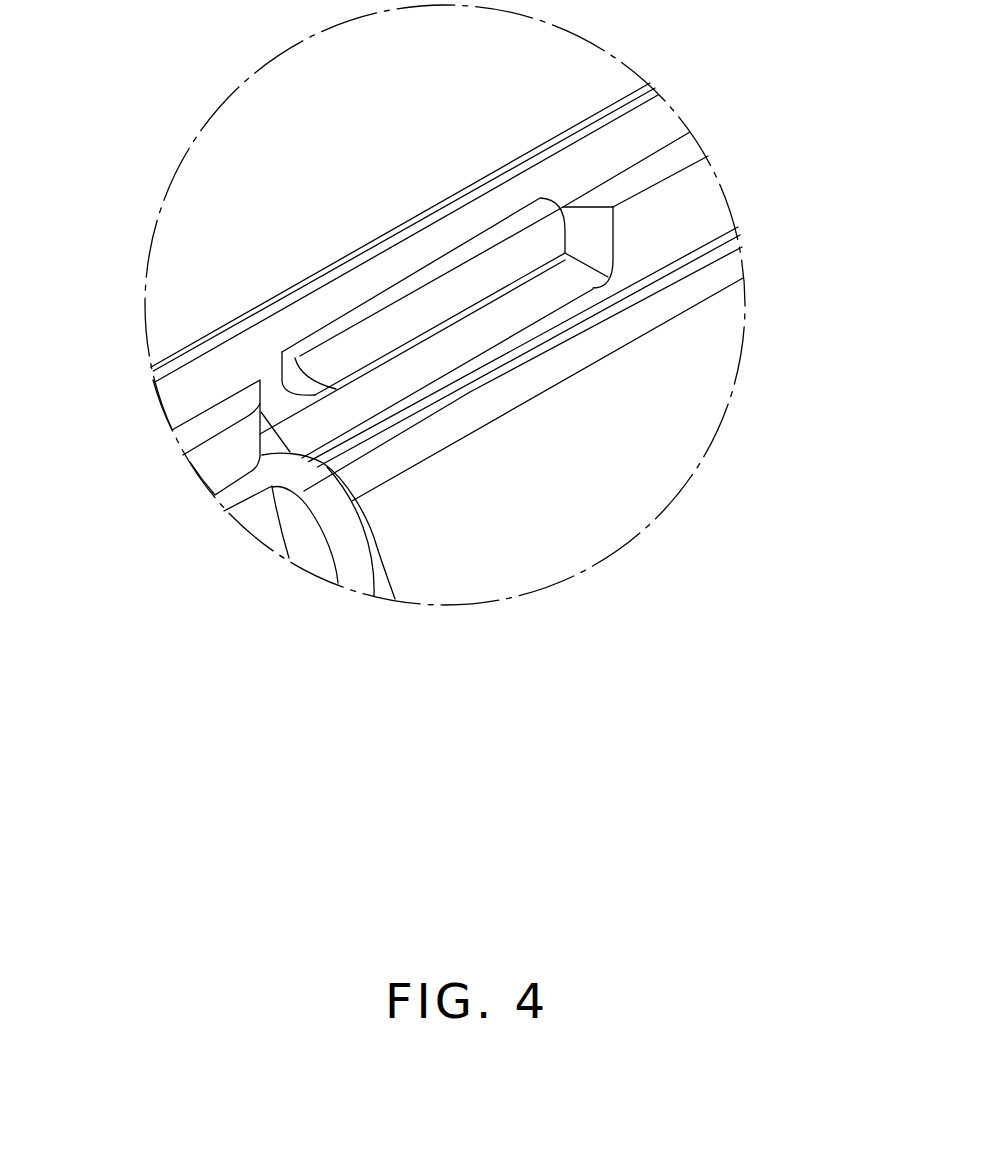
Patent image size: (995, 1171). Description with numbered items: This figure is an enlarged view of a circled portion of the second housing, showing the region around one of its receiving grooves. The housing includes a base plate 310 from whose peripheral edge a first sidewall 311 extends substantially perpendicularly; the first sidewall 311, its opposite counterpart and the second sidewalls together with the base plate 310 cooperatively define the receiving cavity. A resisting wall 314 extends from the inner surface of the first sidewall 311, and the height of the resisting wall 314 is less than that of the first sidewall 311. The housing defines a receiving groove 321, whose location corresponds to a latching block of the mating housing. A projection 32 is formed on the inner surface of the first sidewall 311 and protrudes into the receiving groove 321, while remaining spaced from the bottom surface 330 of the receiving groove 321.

The base plate 310 is at (722, 322).
The first sidewall 311 is at (660, 122).
The resisting wall 314 is at (698, 205).
The bottom surface 330 is at (458, 344).
The projection 32 is at (365, 344).
The receiving groove 321 is at (293, 420).